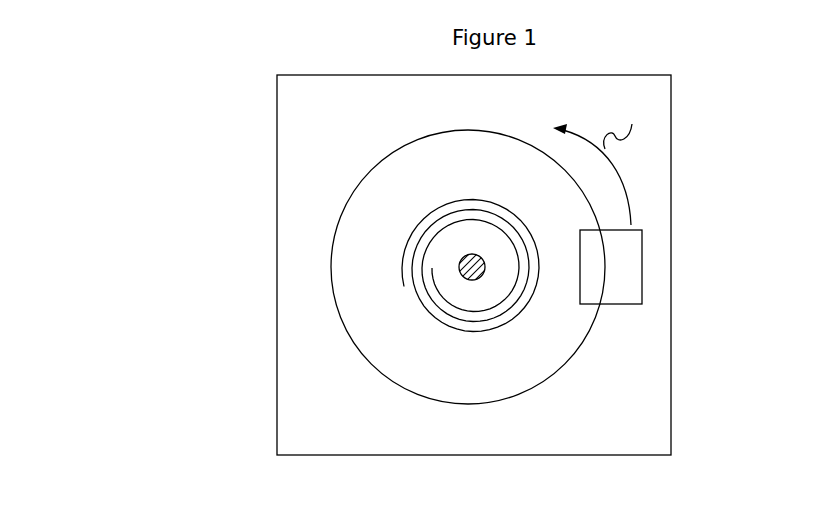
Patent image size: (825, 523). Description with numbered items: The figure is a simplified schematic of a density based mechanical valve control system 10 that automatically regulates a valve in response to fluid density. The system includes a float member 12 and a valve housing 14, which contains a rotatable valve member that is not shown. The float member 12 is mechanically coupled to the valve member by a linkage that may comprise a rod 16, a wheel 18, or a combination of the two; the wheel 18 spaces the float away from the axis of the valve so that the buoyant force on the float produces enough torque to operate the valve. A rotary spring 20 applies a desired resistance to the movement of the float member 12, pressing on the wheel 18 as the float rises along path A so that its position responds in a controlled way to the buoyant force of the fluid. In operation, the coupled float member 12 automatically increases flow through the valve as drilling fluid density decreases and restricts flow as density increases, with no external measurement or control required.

The density based mechanical valve control system 10 is at (208, 150).
The float member 12 is at (642, 272).
The valve housing 14 is at (277, 207).
The rod 16 is at (485, 273).
The wheel 18 is at (340, 312).
The rotary spring 20 is at (453, 322).